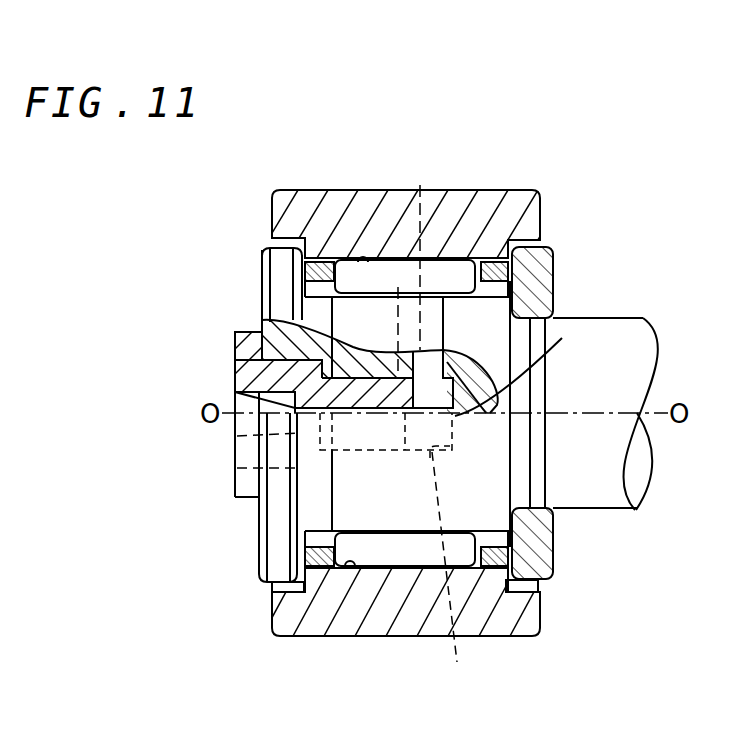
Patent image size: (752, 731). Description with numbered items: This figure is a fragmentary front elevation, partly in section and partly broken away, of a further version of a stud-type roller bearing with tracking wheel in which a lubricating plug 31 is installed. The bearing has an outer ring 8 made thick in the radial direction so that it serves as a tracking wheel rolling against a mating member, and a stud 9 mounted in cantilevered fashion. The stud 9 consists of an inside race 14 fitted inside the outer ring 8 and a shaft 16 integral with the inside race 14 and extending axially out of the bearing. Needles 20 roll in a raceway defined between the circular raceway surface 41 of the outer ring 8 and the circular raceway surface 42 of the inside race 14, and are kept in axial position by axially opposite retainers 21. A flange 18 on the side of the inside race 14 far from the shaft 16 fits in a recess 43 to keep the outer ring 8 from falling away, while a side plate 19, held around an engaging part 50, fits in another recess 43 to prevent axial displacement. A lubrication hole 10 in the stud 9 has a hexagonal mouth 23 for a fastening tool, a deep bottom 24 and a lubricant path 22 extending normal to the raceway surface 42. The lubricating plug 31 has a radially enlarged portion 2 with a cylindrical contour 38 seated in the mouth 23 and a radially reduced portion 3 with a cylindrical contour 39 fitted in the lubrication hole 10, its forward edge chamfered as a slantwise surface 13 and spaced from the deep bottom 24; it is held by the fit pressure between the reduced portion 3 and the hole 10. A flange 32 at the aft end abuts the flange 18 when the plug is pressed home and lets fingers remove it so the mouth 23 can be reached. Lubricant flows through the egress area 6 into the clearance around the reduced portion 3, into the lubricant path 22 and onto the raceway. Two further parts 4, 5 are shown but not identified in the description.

The radially enlarged portion 2 is at (280, 372).
The radially reduced portion 3 is at (345, 397).
The axle 4 is at (262, 407).
The sleeve 5 is at (258, 404).
The egress area 6 is at (360, 405).
The outer ring 8 is at (484, 215).
The stud 9 is at (613, 345).
The lubrication hole 10 is at (454, 573).
The slantwise surface 13 is at (400, 376).
The inside race 14 is at (400, 515).
The shaft 16 is at (602, 495).
The flange 18 is at (272, 557).
The side plate 19 is at (540, 264).
The needle 20 is at (451, 272).
The retainer 21 is at (316, 270).
The lubricant path 22 is at (420, 248).
The mouth 23 is at (273, 467).
The deep bottom 24 is at (562, 338).
The lubricating plug 31 is at (234, 374).
The flange 32 is at (247, 342).
The cylindrical contour 38 is at (268, 248).
The cylindrical contour 39 is at (340, 268).
The circular raceway surface 41 is at (362, 262).
The circular raceway surface 42 is at (398, 285).
The recess 43 is at (272, 587).
The engaging part 50 is at (537, 435).